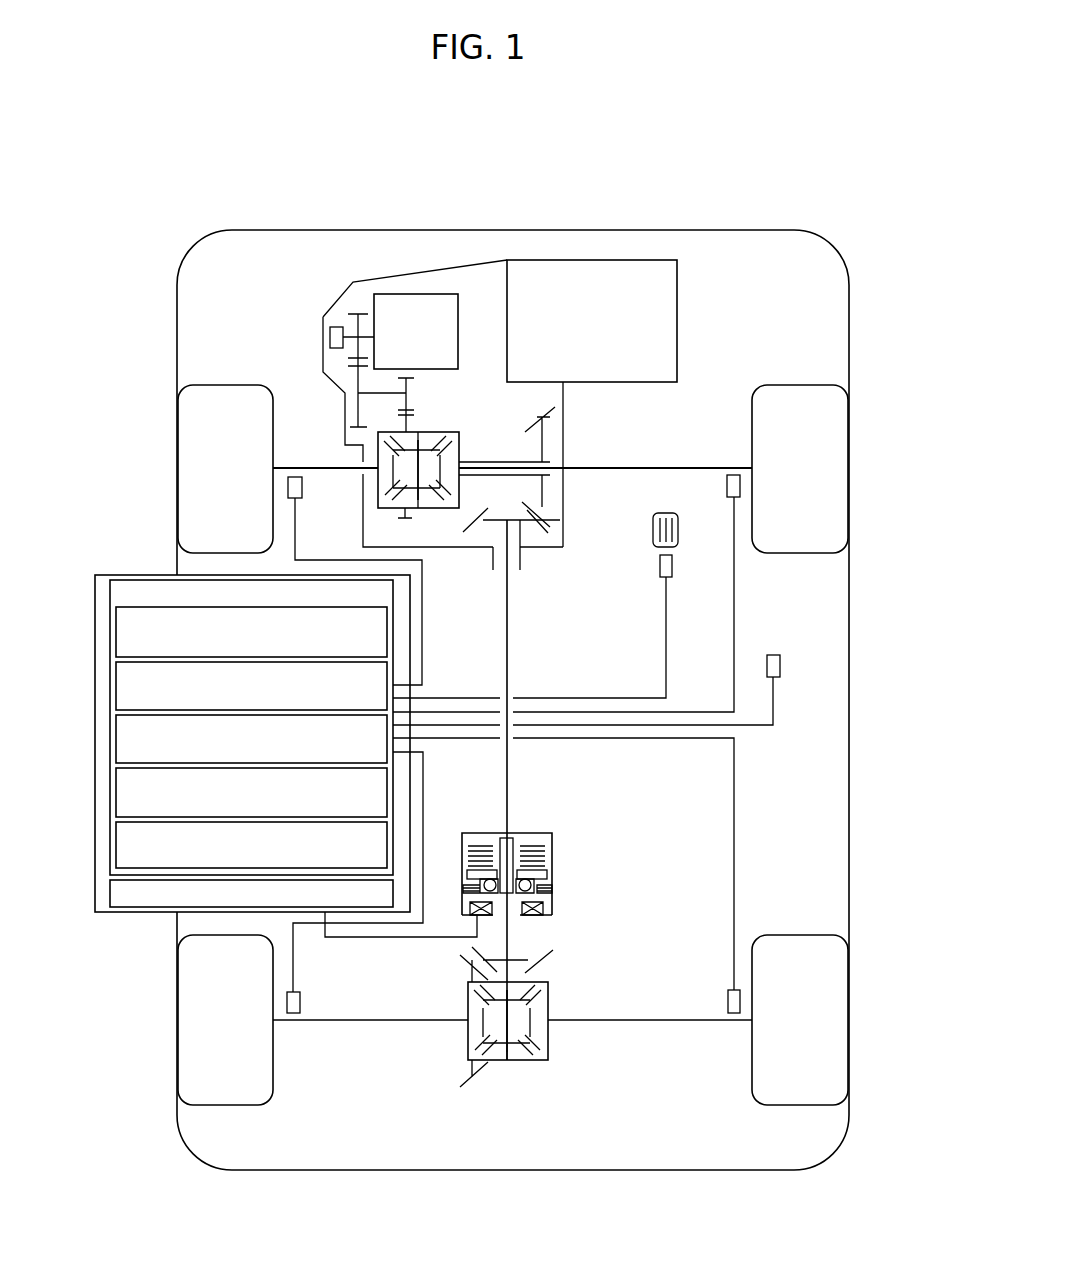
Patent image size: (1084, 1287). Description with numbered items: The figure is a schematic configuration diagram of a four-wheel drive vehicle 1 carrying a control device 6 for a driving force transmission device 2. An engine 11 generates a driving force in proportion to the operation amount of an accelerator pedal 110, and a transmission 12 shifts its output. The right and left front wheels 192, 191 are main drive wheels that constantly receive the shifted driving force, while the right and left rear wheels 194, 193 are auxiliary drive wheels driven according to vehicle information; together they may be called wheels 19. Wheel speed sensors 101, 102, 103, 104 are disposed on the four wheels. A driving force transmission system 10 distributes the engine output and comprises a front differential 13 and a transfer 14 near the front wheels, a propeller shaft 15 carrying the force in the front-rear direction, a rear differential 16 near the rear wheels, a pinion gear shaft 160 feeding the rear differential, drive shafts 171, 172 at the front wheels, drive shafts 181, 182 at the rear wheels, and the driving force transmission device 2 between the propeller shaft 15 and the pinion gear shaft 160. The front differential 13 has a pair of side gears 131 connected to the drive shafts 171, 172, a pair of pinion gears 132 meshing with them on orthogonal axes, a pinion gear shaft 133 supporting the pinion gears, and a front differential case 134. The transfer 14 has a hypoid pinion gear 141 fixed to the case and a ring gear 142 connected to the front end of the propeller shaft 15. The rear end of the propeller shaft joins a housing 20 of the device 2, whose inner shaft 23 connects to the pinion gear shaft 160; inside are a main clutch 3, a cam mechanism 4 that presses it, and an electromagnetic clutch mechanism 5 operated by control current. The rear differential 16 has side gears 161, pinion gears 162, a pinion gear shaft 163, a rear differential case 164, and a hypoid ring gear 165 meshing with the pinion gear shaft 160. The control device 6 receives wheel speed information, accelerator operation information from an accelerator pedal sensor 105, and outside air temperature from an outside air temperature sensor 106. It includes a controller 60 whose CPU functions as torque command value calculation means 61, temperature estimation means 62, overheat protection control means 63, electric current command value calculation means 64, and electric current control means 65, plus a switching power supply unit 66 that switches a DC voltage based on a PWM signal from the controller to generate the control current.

The four-wheel drive vehicle 1 is at (789, 192).
The driving force transmission device 2 is at (515, 846).
The main clutch 3 is at (545, 850).
The cam mechanism 4 is at (543, 875).
The electromagnetic clutch mechanism 5 is at (538, 893).
The control device 6 is at (258, 724).
The driving force transmission system 10 is at (610, 444).
The engine 11 is at (626, 260).
The transmission 12 is at (410, 292).
The front differential 13 is at (399, 464).
The transfer 14 is at (538, 500).
The propeller shaft 15 is at (508, 642).
The rear differential 16 is at (512, 1026).
The wheels 19 is at (511, 745).
The housing 20 is at (470, 833).
The inner shaft 23 is at (505, 843).
The controller 60 is at (110, 598).
The torque command value calculation means 61 is at (116, 636).
The temperature estimation means 62 is at (116, 689).
The overheat protection control means 63 is at (116, 741).
The electric current command value calculation means 64 is at (116, 793).
The electric current control means 65 is at (116, 836).
The switching power supply unit 66 is at (110, 891).
The wheel speed sensor 101 is at (295, 477).
The wheel speed sensor 102 is at (733, 475).
The wheel speed sensor 103 is at (300, 995).
The wheel speed sensor 104 is at (728, 997).
The accelerator pedal sensor 105 is at (660, 570).
The outside air temperature sensor 106 is at (775, 653).
The accelerator pedal 110 is at (667, 513).
The side gears 131 is at (393, 485).
The pinion gears 132 is at (423, 447).
The pinion gear shaft 133 is at (417, 468).
The front differential case 134 is at (385, 431).
The pinion gear 141 is at (542, 503).
The ring gear 142 is at (520, 522).
The pinion gear shaft 160 is at (510, 937).
The side gears 161 is at (483, 1028).
The pinion gears 162 is at (520, 995).
The pinion gear shaft 163 is at (507, 1018).
The rear differential case 164 is at (528, 1060).
The ring gear 165 is at (467, 957).
The drive shaft 171 is at (343, 468).
The drive shaft 172 is at (653, 465).
The drive shaft 181 is at (390, 1022).
The drive shaft 182 is at (688, 1022).
The left front wheel 191 is at (192, 445).
The right front wheel 192 is at (838, 443).
The left rear wheel 193 is at (192, 1040).
The right rear wheel 194 is at (840, 1040).